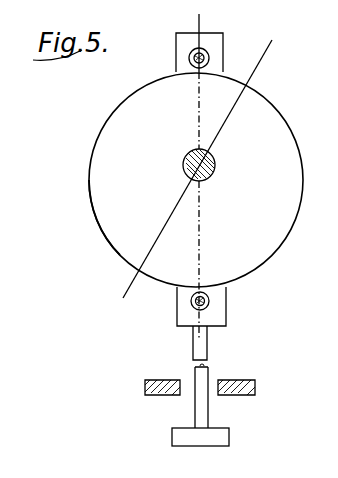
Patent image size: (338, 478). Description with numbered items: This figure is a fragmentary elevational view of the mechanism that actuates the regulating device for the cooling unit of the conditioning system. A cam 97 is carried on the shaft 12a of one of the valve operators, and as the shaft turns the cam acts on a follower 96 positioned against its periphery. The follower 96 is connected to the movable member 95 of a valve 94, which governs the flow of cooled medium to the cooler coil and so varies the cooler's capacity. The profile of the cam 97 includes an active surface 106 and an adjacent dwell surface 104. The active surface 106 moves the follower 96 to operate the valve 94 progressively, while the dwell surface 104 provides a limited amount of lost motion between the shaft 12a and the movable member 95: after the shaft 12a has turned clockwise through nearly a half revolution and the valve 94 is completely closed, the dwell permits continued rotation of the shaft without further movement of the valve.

The cam 97 is at (258, 103).
The shaft 12a is at (215, 168).
The active surface 106 is at (103, 228).
The dwell surface 104 is at (158, 280).
The follower 96 is at (218, 312).
The valve 94 is at (213, 403).
The movable member 95 is at (227, 435).